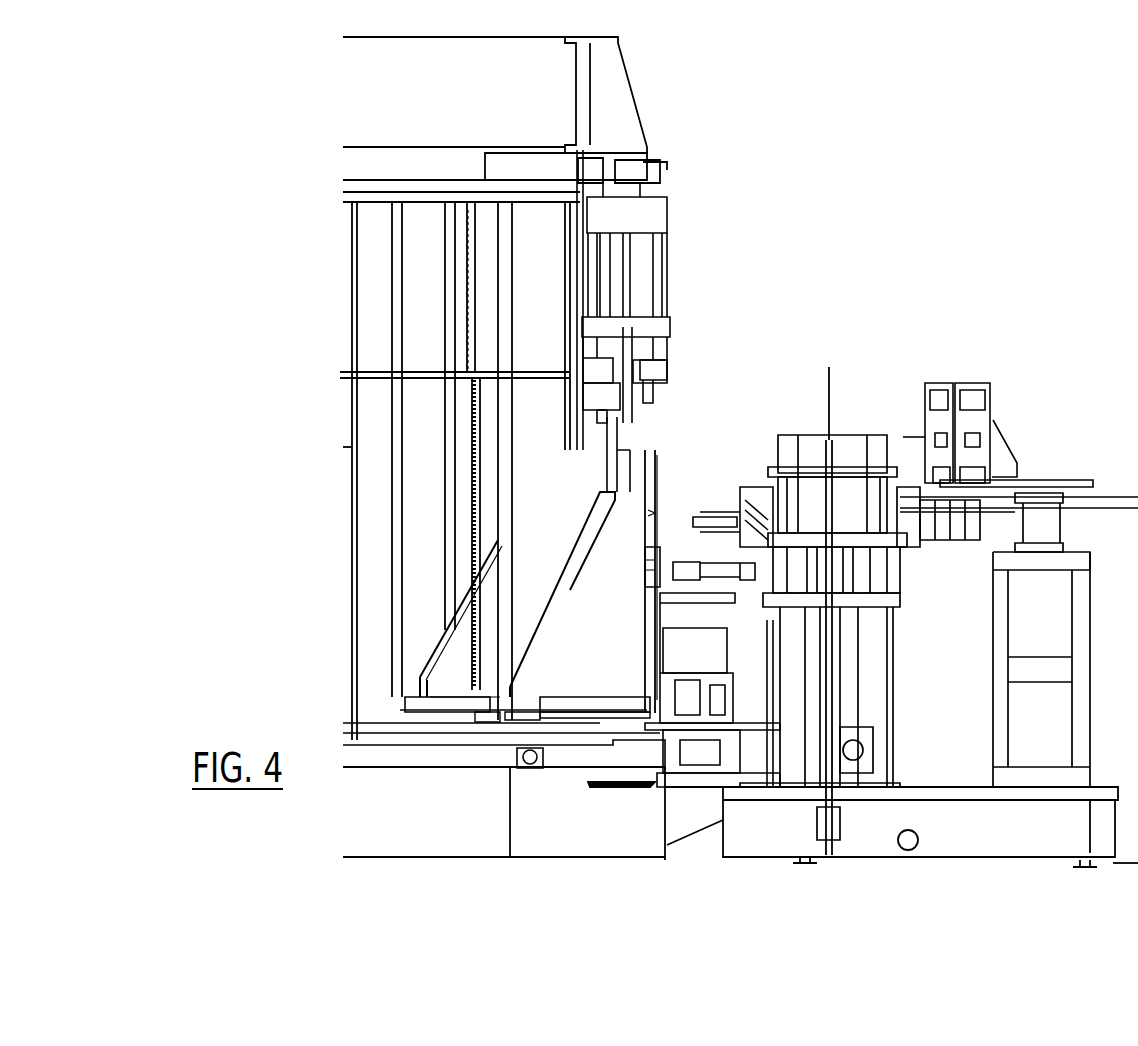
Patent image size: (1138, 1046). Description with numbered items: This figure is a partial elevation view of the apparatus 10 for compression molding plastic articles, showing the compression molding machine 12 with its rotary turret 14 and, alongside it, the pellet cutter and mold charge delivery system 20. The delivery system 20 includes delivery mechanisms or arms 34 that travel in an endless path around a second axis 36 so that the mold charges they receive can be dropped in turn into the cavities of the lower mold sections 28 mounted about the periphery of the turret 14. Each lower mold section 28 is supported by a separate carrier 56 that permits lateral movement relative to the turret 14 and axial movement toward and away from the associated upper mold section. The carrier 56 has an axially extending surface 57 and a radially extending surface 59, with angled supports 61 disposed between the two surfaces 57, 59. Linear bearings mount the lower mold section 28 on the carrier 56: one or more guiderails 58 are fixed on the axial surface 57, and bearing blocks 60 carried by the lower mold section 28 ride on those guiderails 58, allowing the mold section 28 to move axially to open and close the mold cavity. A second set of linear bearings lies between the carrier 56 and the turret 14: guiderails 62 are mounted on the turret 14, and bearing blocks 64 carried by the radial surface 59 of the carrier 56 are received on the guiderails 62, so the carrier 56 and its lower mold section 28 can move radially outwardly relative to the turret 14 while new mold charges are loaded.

The apparatus 10 is at (814, 217).
The compression molding machine 12 is at (646, 71).
The rotary turret 14 is at (335, 300).
The pellet cutter and mold charge delivery system 20 is at (857, 415).
The lower mold section 28 is at (695, 647).
The delivery arm 34 is at (708, 520).
The second axis 36 is at (832, 376).
The carrier 56 is at (431, 649).
The axially extending surface 57 is at (648, 525).
The guiderail 58 is at (615, 456).
The radially extending surface 59 is at (610, 713).
The bearing block 60 is at (647, 575).
The angled support 61 is at (475, 683).
The guiderail 62 is at (488, 718).
The bearing block 64 is at (558, 710).